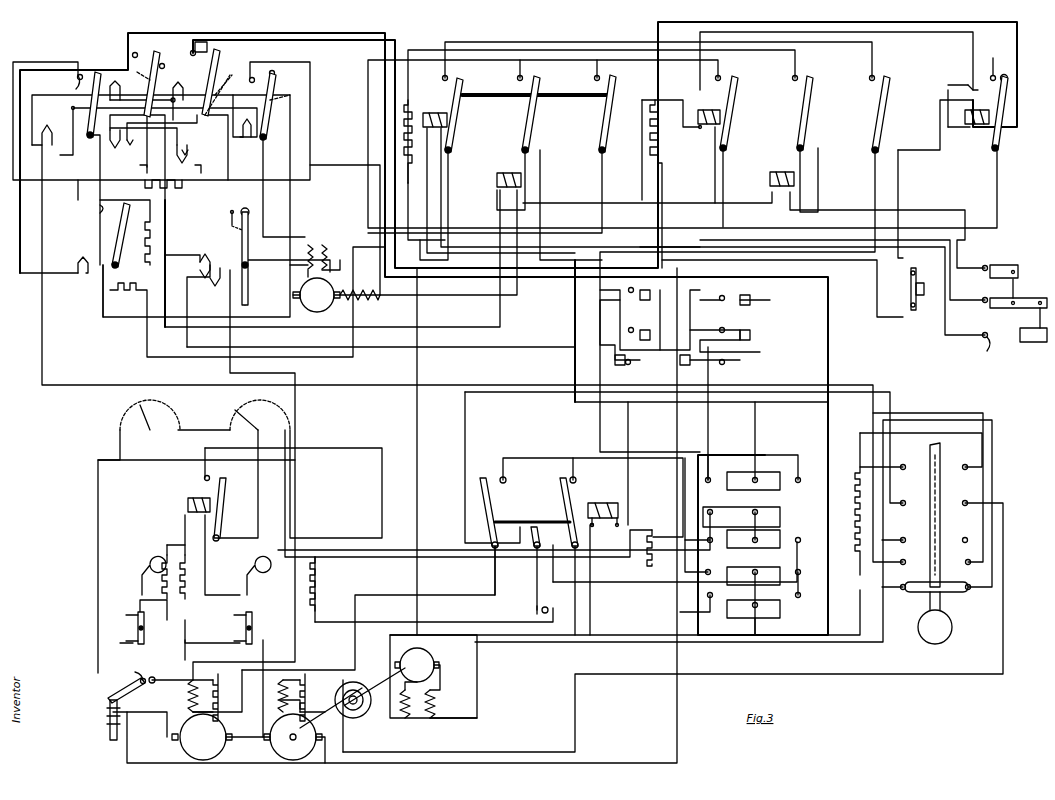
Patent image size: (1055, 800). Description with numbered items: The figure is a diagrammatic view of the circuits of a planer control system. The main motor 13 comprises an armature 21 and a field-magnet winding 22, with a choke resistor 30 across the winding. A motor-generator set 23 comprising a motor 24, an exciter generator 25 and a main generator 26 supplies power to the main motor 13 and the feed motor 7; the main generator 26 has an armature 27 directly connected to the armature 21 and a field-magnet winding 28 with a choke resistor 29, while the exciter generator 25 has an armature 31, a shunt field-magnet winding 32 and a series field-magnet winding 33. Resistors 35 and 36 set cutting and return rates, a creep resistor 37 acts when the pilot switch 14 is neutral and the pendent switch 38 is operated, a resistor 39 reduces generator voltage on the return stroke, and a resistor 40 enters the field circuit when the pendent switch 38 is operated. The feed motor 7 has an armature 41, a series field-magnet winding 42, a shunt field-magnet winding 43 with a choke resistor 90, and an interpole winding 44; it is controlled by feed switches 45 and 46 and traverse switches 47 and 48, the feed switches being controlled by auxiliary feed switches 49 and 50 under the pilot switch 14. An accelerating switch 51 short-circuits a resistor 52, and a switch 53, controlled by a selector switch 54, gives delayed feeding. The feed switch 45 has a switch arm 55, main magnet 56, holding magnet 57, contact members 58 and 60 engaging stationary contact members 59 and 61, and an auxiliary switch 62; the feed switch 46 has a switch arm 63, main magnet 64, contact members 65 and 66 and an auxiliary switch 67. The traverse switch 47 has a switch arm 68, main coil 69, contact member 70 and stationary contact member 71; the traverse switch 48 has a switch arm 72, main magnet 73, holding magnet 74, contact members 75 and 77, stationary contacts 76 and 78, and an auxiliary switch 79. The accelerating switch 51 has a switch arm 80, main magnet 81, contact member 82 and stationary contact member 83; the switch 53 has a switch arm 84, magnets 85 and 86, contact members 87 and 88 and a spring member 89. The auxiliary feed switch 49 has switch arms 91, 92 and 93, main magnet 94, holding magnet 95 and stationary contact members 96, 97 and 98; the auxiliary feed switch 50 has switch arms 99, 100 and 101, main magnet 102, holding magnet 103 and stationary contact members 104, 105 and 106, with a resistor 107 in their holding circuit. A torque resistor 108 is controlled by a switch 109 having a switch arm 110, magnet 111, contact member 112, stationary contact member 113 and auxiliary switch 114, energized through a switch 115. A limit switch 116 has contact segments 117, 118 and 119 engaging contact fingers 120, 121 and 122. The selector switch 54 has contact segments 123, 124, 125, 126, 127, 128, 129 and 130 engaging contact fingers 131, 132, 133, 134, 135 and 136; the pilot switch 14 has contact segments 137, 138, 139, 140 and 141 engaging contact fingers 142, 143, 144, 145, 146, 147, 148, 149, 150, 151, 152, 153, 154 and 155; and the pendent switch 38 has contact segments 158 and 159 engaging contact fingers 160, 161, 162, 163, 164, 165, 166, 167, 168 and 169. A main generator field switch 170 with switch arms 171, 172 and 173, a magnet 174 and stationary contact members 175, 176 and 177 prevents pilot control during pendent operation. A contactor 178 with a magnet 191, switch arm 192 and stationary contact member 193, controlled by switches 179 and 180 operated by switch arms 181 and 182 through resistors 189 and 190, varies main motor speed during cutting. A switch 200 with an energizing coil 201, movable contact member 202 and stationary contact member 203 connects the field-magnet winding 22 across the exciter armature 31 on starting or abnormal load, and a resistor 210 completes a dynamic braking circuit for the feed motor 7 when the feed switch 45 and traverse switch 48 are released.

The feed motor 7 is at (320, 301).
The main motor 13 is at (227, 737).
The pilot switch 14 is at (763, 532).
The armature 21 is at (227, 733).
The field-magnet winding 22 is at (188, 690).
The motor-generator set 23 is at (370, 693).
The motor 24 is at (316, 697).
The exciter generator 25 is at (433, 676).
The main generator 26 is at (287, 737).
The armature 27 is at (308, 760).
The field-magnet winding 28 is at (280, 690).
The choke resistor 29 is at (312, 707).
The choke resistor 30 is at (215, 697).
The armature 31 is at (400, 658).
The shunt field-magnet winding 32 is at (405, 718).
The series field-magnet winding 33 is at (436, 700).
The resistor 35 is at (249, 414).
The resistor 36 is at (158, 414).
The creep resistor 37 is at (318, 595).
The pendent switch 38 is at (946, 618).
The resistor 39 is at (640, 548).
The resistor 40 is at (855, 540).
The armature 41 is at (297, 300).
The series field-magnet winding 42 is at (308, 244).
The shunt field-magnet winding 43 is at (324, 244).
The interpole winding 44 is at (360, 304).
The feed switch 45 is at (168, 92).
The feed switch 46 is at (270, 116).
The traverse switch 47 is at (97, 97).
The traverse switch 48 is at (220, 49).
The auxiliary feed switch 49 is at (536, 116).
The auxiliary feed switch 50 is at (708, 109).
The accelerating switch 51 is at (110, 232).
The resistor 52 is at (139, 243).
The switch 53 is at (217, 255).
The selector switch 54 is at (701, 339).
The switch arm 55 is at (164, 64).
The main magnet 56 is at (118, 86).
The holding magnet 57 is at (113, 146).
The contact member 58 is at (132, 149).
The stationary contact member 59 is at (138, 167).
The contact member 60 is at (157, 60).
The stationary contact member 61 is at (135, 52).
The auxiliary switch 62 is at (144, 70).
The switch arm 63 is at (275, 85).
The main magnet 64 is at (245, 143).
The contact member 65 is at (275, 72).
The contact member 66 is at (254, 78).
The auxiliary switch 67 is at (291, 95).
The switch arm 68 is at (100, 100).
The main coil 69 is at (48, 128).
The contact member 70 is at (78, 72).
The stationary contact member 71 is at (79, 80).
The switch arm 72 is at (228, 75).
The main magnet 73 is at (180, 84).
The holding magnet 74 is at (179, 160).
The contact member 75 is at (216, 48).
The stationary contact member 76 is at (193, 50).
The contact member 77 is at (201, 168).
The stationary contact 78 is at (187, 155).
The auxiliary switch 79 is at (229, 78).
The switch arm 80 is at (113, 262).
The main magnet 81 is at (80, 260).
The contact member 82 is at (114, 235).
The stationary contact member 83 is at (98, 210).
The switch arm 84 is at (249, 236).
The magnet 85 is at (201, 266).
The magnet 86 is at (215, 288).
The contact member 87 is at (250, 211).
The stationary contact member 88 is at (231, 210).
The spring member 89 is at (233, 234).
The choke resistor 90 is at (128, 283).
The switch arm 91 is at (462, 90).
The switch arm 92 is at (538, 90).
The switch arm 93 is at (605, 115).
The main magnet 94 is at (430, 112).
The holding magnet 95 is at (497, 180).
The stationary contact member 96 is at (448, 77).
The stationary contact member 97 is at (523, 77).
The stationary contact member 98 is at (594, 77).
The switch arm 99 is at (740, 92).
The switch arm 100 is at (814, 92).
The switch arm 101 is at (885, 105).
The main magnet 102 is at (700, 130).
The holding magnet 103 is at (776, 172).
The stationary contact member 104 is at (721, 77).
The stationary contact member 105 is at (798, 77).
The stationary contact member 106 is at (875, 77).
The resistor 107 is at (412, 218).
The torque resistor 108 is at (663, 131).
The switch 109 is at (954, 85).
The switch arm 110 is at (1006, 100).
The magnet 111 is at (976, 126).
The contact member 112 is at (1008, 79).
The stationary contact member 113 is at (1000, 61).
The auxiliary switch 114 is at (972, 87).
The switch 115 is at (911, 290).
The limit switch 116 is at (1018, 293).
The contact segment 117 is at (1013, 265).
The contact segment 118 is at (1018, 297).
The contact segment 119 is at (1035, 343).
The contact finger 120 is at (985, 262).
The contact finger 121 is at (976, 294).
The contact finger 122 is at (978, 350).
The contact segment 123 is at (750, 300).
The contact segment 124 is at (750, 335).
The contact segment 125 is at (674, 360).
The contact segment 126 is at (680, 317).
The contact segment 127 is at (651, 292).
The contact segment 128 is at (650, 334).
The contact segment 129 is at (620, 365).
The contact segment 130 is at (594, 317).
The contact finger 131 is at (734, 293).
The contact finger 132 is at (722, 319).
The contact finger 133 is at (734, 365).
The contact finger 134 is at (628, 290).
The contact finger 135 is at (630, 322).
The contact finger 136 is at (638, 360).
The contact segment 137 is at (750, 473).
The contact segment 138 is at (780, 507).
The contact segment 139 is at (780, 530).
The contact segment 140 is at (759, 602).
The contact segment 141 is at (770, 626).
The contact finger 142 is at (809, 473).
The contact finger 143 is at (805, 534).
The contact finger 144 is at (799, 575).
The contact finger 145 is at (800, 598).
The contact finger 146 is at (708, 598).
The contact finger 147 is at (710, 583).
The contact finger 148 is at (708, 532).
The contact finger 149 is at (723, 512).
The contact finger 150 is at (705, 490).
The contact finger 151 is at (768, 469).
The contact finger 152 is at (768, 512).
The contact finger 153 is at (768, 534).
The contact finger 154 is at (753, 575).
The contact finger 155 is at (768, 610).
The contact segment 158 is at (930, 485).
The contact segment 159 is at (923, 592).
The contact finger 160 is at (908, 459).
The contact finger 161 is at (905, 497).
The contact finger 162 is at (905, 534).
The contact finger 163 is at (905, 556).
The contact finger 164 is at (908, 581).
The contact finger 165 is at (960, 459).
The contact finger 166 is at (960, 497).
The contact finger 167 is at (960, 534).
The contact finger 168 is at (962, 556).
The contact finger 169 is at (960, 581).
The main generator field switch 170 is at (603, 504).
The switch arm 171 is at (492, 515).
The switch arm 172 is at (560, 490).
The switch arm 173 is at (537, 580).
The magnet 174 is at (608, 520).
The stationary contact member 175 is at (548, 608).
The stationary contact member 176 is at (506, 479).
The stationary contact member 177 is at (573, 476).
The contactor 178 is at (186, 499).
The switch 179 is at (126, 628).
The switch 180 is at (244, 628).
The switch arm 181 is at (142, 590).
The switch arm 182 is at (245, 597).
The resistor 189 is at (190, 575).
The resistor 190 is at (158, 577).
The magnet 191 is at (188, 505).
The switch arm 192 is at (224, 495).
The stationary contact member 193 is at (210, 477).
The switch 200 is at (118, 690).
The energizing coil 201 is at (108, 722).
The movable contact member 202 is at (128, 668).
The stationary contact member 203 is at (155, 679).
The resistor 210 is at (145, 184).